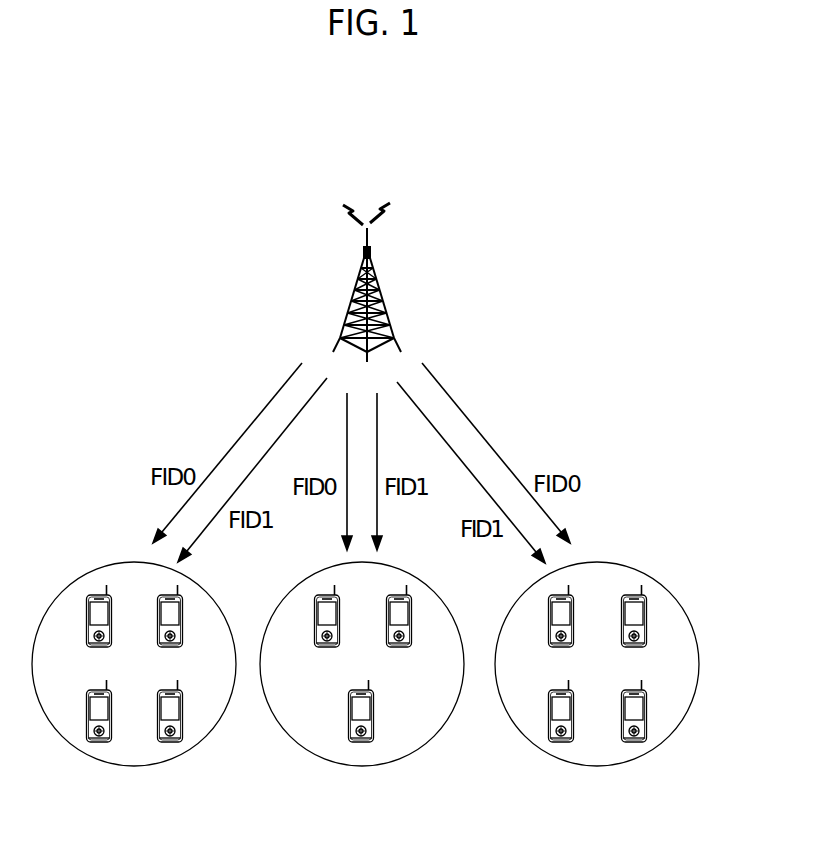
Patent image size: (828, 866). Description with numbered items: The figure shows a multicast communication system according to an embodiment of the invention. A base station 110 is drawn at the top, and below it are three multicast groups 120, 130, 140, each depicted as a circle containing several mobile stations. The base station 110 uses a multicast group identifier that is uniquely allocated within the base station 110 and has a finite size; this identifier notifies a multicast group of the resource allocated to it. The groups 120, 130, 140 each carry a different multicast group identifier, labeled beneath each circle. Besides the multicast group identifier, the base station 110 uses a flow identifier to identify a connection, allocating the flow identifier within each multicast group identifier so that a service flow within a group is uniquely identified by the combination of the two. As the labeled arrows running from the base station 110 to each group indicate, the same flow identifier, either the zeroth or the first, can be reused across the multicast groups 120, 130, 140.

The base station 110 is at (385, 303).
The multicast group 120 is at (200, 586).
The multicast group 130 is at (425, 586).
The multicast group 140 is at (660, 586).